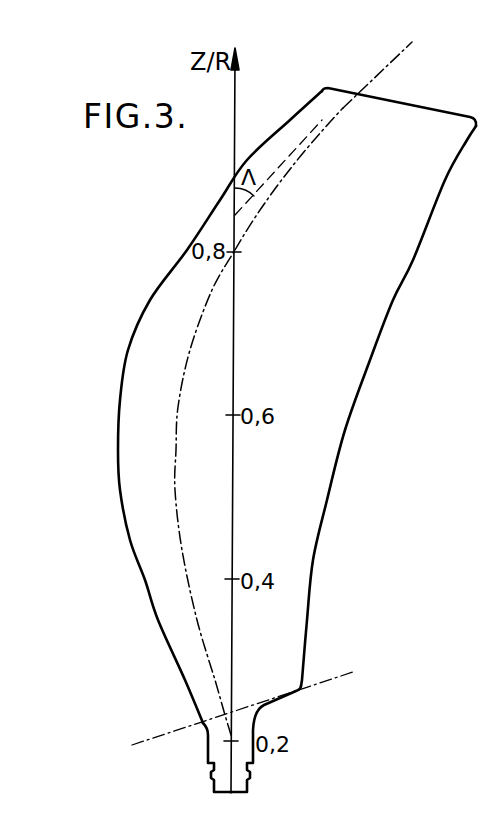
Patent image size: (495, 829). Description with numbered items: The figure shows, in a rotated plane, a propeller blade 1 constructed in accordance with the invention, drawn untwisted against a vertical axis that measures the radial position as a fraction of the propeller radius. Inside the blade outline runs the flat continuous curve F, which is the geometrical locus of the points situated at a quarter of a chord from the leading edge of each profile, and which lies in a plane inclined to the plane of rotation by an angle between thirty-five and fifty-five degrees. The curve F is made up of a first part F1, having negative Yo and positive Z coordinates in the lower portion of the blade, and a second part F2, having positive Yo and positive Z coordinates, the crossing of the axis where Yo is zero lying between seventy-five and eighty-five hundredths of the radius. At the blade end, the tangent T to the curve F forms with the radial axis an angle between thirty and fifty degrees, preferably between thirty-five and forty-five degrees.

The blade 1 is at (403, 117).
The flat continuous curve F is at (189, 352).
The first part of curve F F1 is at (177, 451).
The second part of curve F F2 is at (300, 166).
The tangent to curve F T is at (386, 64).